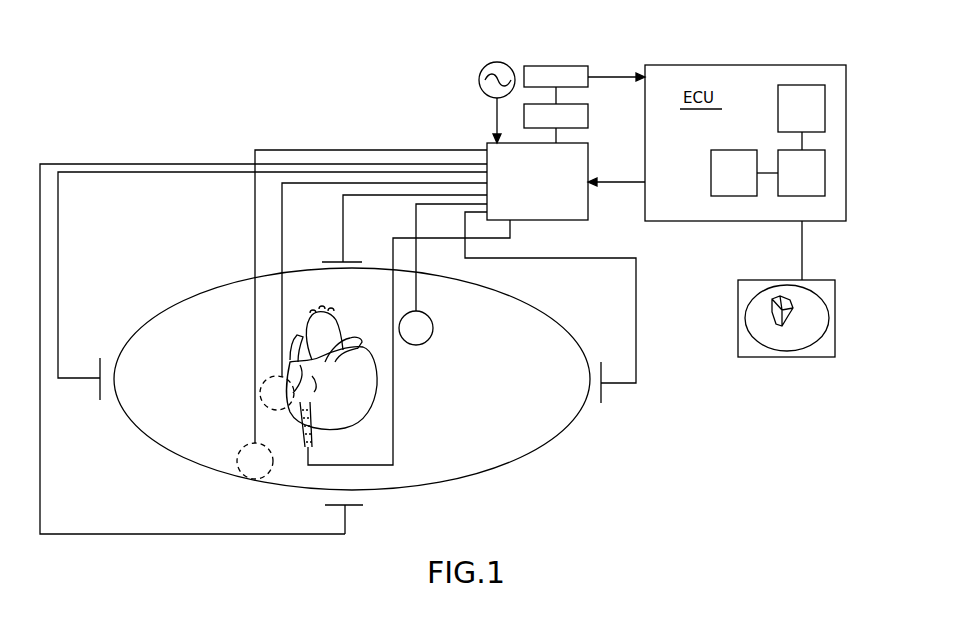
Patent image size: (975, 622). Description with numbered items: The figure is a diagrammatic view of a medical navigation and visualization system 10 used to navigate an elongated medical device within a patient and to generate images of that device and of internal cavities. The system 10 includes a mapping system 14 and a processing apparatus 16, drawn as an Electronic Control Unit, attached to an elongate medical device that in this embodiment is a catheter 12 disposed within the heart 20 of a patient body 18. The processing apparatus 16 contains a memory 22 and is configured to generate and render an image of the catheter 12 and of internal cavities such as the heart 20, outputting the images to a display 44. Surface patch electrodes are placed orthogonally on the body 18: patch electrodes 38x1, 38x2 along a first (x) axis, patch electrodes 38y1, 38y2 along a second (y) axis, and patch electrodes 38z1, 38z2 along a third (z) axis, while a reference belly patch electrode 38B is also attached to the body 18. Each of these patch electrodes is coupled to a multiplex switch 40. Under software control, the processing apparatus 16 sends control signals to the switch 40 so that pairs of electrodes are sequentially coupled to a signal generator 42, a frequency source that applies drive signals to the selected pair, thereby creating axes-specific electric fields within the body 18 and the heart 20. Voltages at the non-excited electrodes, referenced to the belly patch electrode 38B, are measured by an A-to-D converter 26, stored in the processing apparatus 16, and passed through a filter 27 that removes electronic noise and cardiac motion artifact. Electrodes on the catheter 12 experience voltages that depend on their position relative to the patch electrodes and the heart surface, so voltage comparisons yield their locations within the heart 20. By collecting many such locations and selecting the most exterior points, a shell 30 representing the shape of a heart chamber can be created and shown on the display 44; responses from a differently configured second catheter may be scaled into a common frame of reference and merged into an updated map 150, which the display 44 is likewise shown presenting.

The medical navigation and visualization system 10 is at (182, 45).
The catheter 12 is at (306, 397).
The mapping system 14 is at (825, 113).
The processing apparatus 16 is at (825, 176).
The body 18 is at (533, 307).
The heart 20 is at (372, 373).
The memory 22 is at (735, 196).
The A-to-D converter 26 is at (568, 66).
The filter 27 is at (590, 118).
The shell 30 is at (825, 343).
The updated map 150 is at (788, 338).
The multiplex switch 40 is at (537, 207).
The signal generator 42 is at (479, 77).
The display 44 is at (835, 290).
The patch electrode 38x1 is at (97, 396).
The patch electrode 38x2 is at (605, 398).
The patch electrode 38y1 is at (421, 287).
The patch electrode 38y2 is at (283, 296).
The patch electrode 38z1 is at (337, 258).
The patch electrode 38z2 is at (347, 509).
The belly patch electrode 38B is at (250, 432).